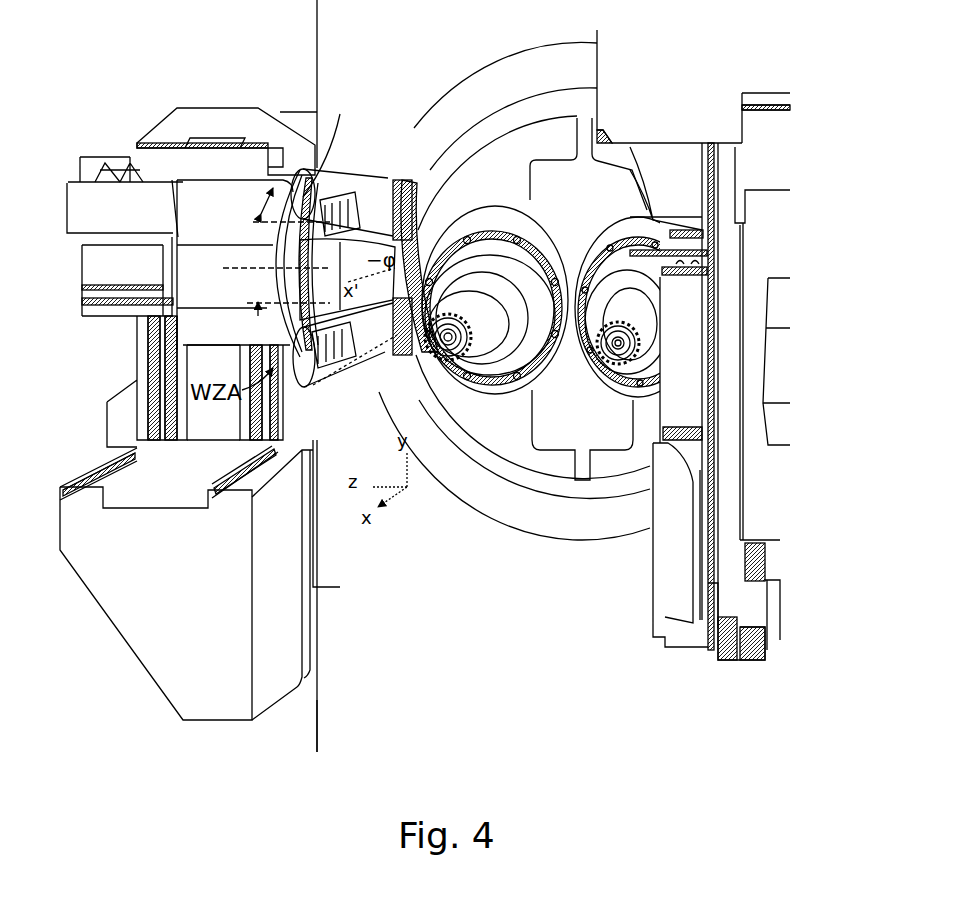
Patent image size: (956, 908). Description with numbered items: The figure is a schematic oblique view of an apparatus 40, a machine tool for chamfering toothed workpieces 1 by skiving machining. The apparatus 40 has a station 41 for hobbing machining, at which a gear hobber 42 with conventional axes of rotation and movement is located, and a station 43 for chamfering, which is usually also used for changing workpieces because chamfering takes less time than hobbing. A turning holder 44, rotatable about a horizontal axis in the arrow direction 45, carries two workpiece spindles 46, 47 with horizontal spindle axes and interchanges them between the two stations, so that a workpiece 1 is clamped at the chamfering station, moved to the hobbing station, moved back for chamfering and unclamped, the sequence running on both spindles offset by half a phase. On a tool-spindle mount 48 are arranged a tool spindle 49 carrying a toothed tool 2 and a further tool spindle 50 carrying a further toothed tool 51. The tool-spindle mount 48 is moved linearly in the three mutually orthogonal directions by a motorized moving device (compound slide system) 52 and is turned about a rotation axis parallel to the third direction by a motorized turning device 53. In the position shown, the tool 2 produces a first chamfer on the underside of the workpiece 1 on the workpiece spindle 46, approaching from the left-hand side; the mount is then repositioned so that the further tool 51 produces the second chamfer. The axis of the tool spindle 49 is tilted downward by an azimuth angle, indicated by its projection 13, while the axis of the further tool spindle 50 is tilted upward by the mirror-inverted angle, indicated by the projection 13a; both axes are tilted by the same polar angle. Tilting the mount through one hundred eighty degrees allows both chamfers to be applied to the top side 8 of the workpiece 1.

The workpiece 1 is at (440, 382).
The toothed tool 2 is at (417, 363).
The top side 8 is at (482, 312).
The projection of the tool axis WZA 13 is at (380, 383).
The projection of the further tool axis WWZA 13a is at (378, 187).
The apparatus 40 is at (428, 636).
The station for hobbing machining 41 is at (623, 428).
The gear hobber 42 is at (690, 292).
The station for chamfering 43 is at (472, 442).
The turning holder 44 is at (518, 157).
The arrow direction 45 is at (606, 175).
The workpiece spindle 46 is at (503, 383).
The workpiece spindle 47 is at (638, 330).
The tool-spindle mount 48 is at (255, 245).
The tool spindle 49 is at (273, 430).
The further tool spindle 50 is at (356, 190).
The further toothed tool 51 is at (420, 187).
The motorized moving device (compound slide system) 52 is at (200, 365).
The motorized turning device 53 is at (203, 213).